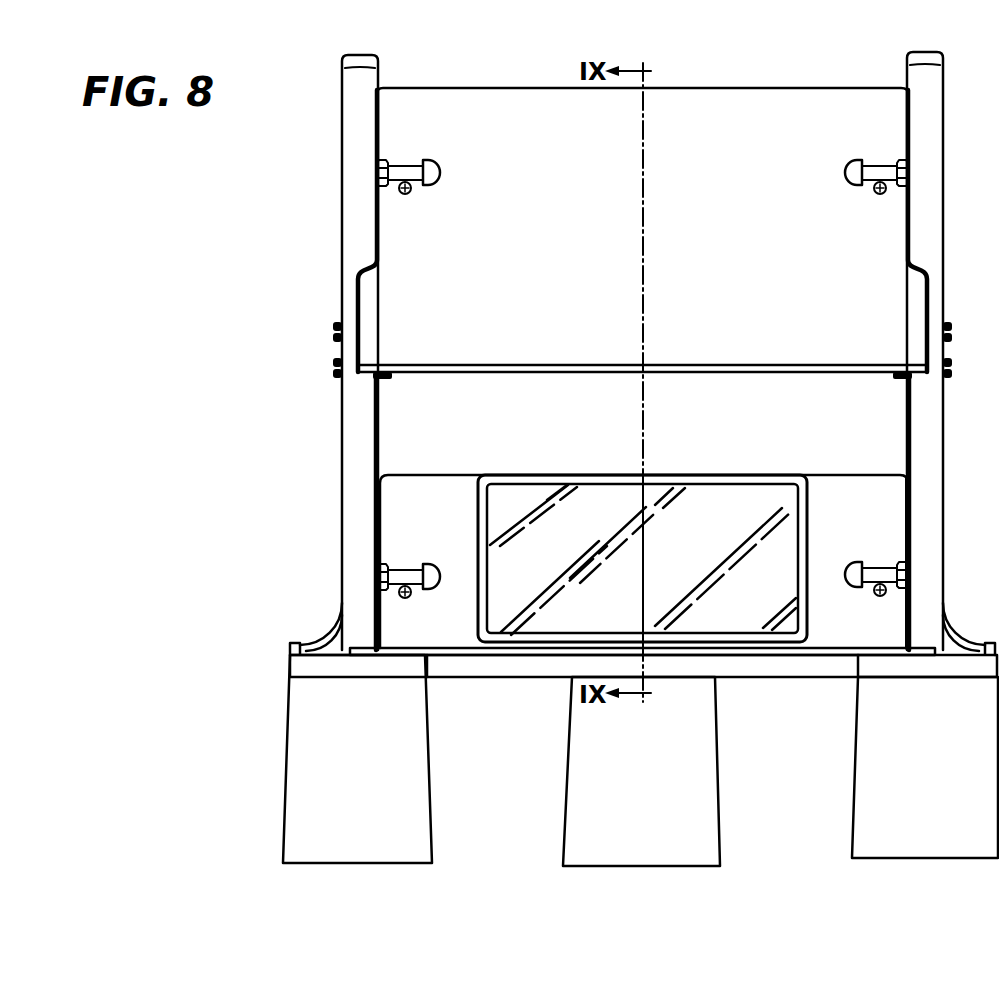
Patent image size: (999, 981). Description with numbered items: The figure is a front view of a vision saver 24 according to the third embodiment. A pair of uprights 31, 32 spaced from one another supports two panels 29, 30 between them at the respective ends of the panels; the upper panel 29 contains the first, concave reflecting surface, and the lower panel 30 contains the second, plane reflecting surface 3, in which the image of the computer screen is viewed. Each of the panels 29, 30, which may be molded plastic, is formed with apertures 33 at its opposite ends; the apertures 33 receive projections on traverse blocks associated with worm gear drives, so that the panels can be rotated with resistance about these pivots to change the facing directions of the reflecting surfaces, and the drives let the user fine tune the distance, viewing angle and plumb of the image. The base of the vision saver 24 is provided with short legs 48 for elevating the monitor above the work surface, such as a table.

The second reflecting surface 3 is at (775, 532).
The vision saver 24 is at (258, 529).
The panel 29 is at (910, 326).
The panel 30 is at (890, 543).
The upright 31 is at (350, 260).
The upright 32 is at (933, 233).
The aperture 33 is at (376, 158).
The leg 48 is at (298, 785).